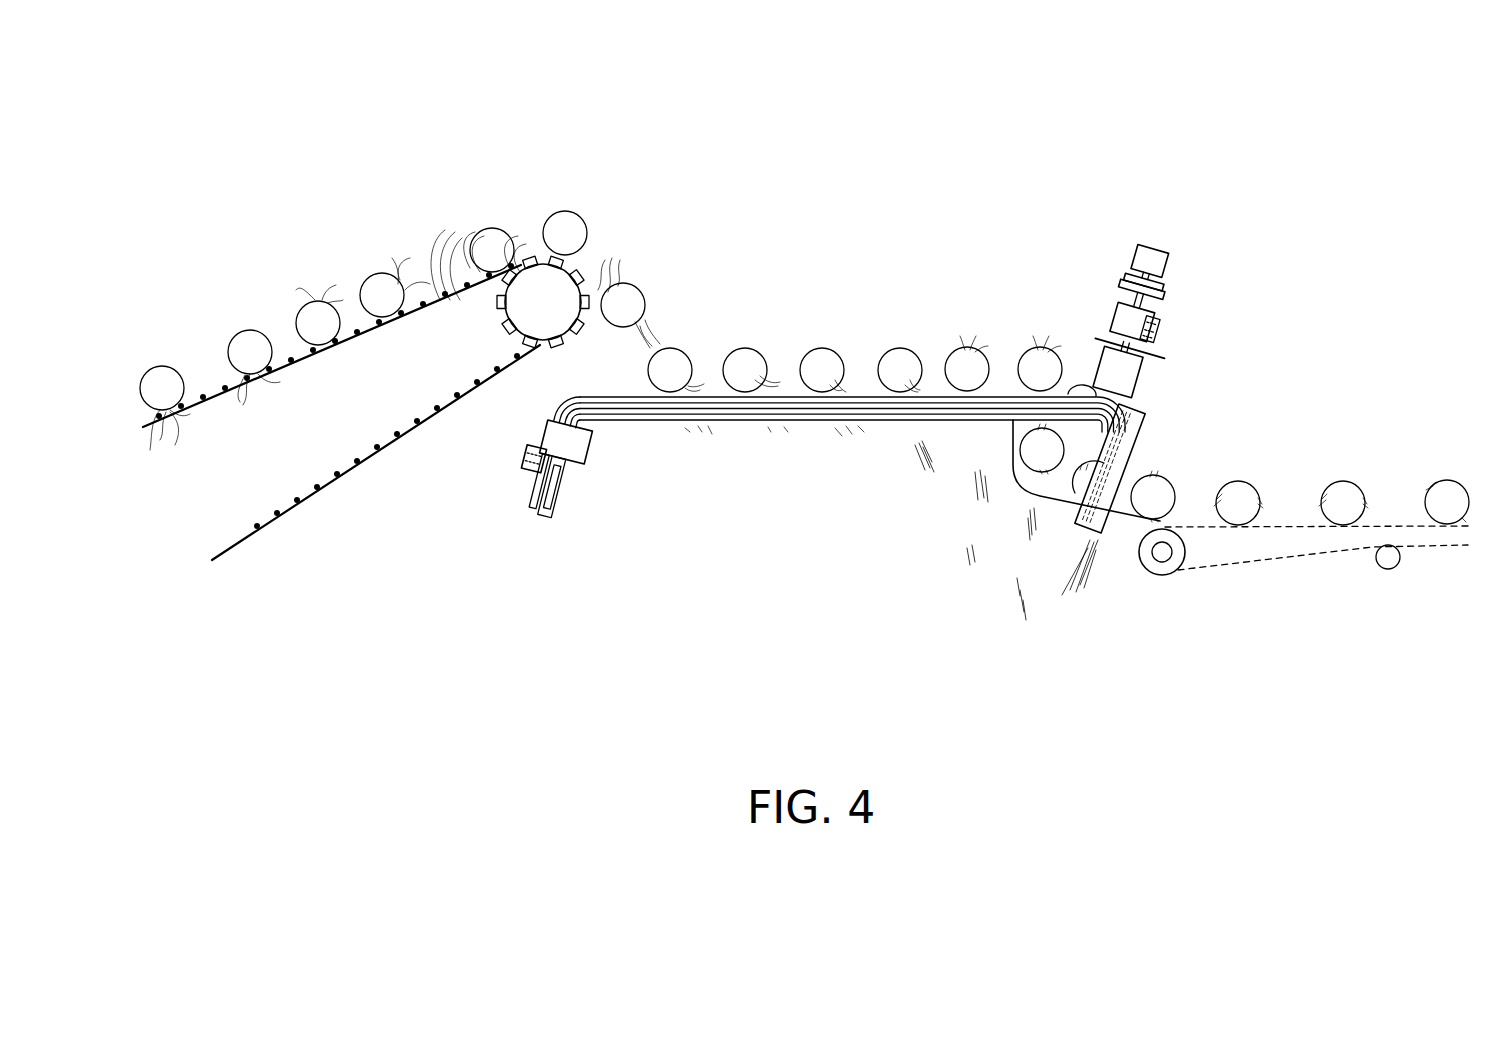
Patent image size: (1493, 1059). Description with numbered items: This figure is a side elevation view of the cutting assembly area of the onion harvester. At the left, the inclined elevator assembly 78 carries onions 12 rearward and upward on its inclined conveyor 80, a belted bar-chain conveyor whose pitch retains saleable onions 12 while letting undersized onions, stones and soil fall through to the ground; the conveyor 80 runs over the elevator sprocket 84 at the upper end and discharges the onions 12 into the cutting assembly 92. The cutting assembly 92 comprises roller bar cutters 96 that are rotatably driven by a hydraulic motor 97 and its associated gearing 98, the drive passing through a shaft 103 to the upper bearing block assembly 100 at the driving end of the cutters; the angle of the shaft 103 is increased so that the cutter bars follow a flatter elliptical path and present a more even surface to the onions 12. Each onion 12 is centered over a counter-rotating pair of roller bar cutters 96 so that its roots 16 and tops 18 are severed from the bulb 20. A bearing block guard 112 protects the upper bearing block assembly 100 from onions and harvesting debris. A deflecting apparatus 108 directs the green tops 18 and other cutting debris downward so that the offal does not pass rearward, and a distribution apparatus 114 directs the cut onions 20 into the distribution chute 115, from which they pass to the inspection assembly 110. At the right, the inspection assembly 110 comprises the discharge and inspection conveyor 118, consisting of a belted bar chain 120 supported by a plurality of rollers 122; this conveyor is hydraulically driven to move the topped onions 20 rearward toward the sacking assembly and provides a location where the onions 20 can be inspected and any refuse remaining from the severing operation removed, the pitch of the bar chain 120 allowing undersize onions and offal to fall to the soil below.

The inclined elevator assembly 78 is at (274, 243).
The inclined conveyor 80 is at (315, 495).
The elevator sprocket 84 is at (563, 287).
The onions 12 is at (377, 290).
The cutting assembly 92 is at (723, 282).
The roller bar cutters 96 is at (737, 410).
The onion bulbs 20 is at (568, 492).
The hydraulic motor 97 is at (1148, 252).
The shaft 103 is at (1130, 290).
The gearing 98 is at (1163, 287).
The bearing block guard 112 is at (1103, 340).
The upper bearing block assembly 100 is at (1133, 370).
The distribution apparatus 114 is at (1087, 383).
The deflecting apparatus 108 is at (1118, 443).
The distribution chute 115 is at (1125, 520).
The inspection assembly 110 is at (1332, 425).
The belted bar chain 120 is at (1257, 563).
The rollers 122 is at (1395, 566).
The discharge and inspection conveyor 118 is at (1385, 513).
The tops 18 is at (925, 466).
The roots 16 is at (1012, 598).